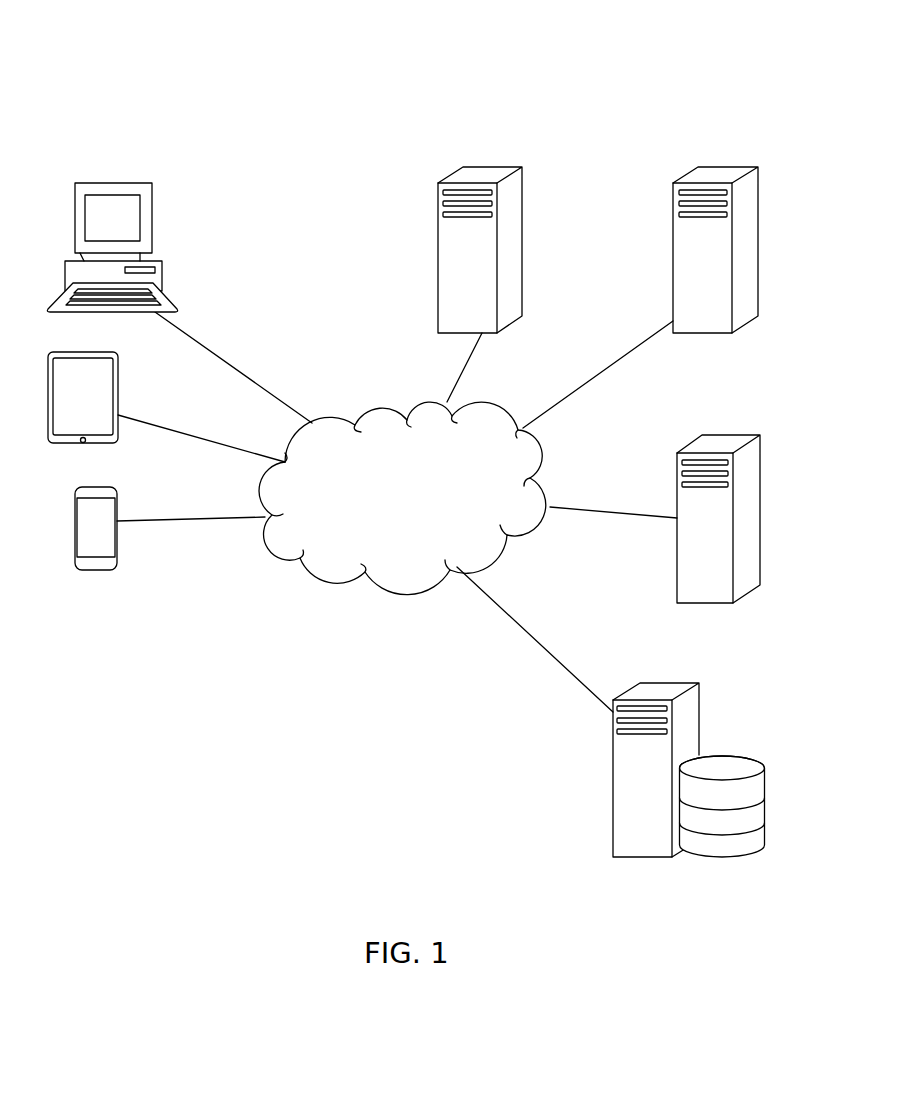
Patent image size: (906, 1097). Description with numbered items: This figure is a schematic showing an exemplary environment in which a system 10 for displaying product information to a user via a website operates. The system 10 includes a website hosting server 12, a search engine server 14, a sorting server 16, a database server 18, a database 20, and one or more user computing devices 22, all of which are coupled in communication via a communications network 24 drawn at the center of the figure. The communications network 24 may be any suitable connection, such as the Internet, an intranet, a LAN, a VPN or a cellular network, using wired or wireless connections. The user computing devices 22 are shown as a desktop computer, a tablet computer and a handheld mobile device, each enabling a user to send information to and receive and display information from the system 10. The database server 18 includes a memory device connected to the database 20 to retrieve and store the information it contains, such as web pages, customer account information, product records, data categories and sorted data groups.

The system 10 is at (576, 44).
The website hosting server 12 is at (530, 163).
The search engine server 14 is at (765, 163).
The sorting server 16 is at (758, 426).
The database server 18 is at (713, 693).
The database 20 is at (767, 751).
The user computing devices 22 is at (79, 183).
The communications network 24 is at (412, 503).